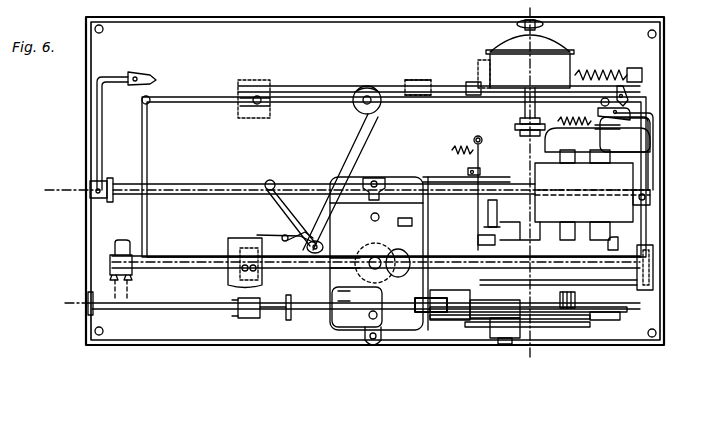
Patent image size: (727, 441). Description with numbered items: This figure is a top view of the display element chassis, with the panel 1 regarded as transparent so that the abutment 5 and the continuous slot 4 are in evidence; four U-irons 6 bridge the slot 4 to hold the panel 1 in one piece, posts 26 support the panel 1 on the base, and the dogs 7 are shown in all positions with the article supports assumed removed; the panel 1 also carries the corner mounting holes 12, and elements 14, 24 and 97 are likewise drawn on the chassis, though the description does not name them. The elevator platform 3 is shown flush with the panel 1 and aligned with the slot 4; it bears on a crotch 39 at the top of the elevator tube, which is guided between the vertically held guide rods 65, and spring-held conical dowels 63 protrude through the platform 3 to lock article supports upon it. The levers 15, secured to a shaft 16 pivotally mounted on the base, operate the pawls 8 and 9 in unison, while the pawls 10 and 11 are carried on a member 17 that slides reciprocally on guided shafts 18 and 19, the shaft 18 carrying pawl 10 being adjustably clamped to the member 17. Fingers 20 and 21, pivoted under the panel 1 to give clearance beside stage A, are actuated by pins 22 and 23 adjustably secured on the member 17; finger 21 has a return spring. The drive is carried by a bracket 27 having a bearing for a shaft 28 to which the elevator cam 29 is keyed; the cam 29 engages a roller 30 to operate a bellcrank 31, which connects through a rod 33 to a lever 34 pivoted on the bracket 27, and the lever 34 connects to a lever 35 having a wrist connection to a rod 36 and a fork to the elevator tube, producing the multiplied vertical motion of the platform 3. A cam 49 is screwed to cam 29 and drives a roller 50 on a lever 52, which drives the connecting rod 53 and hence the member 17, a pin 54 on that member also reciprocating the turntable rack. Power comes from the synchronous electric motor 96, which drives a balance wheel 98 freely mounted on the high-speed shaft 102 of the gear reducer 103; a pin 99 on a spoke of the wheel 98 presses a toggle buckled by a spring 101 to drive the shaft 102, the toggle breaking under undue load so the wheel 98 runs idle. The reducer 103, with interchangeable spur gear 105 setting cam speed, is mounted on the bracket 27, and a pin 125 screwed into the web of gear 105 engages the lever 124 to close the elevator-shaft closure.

The panel 1 is at (86, 84).
The elevator platform 3 is at (420, 242).
The slot 4 is at (147, 160).
The abutment 5 is at (89, 237).
The U-irons 6 is at (270, 116).
The dogs 7 is at (151, 98).
The pawl 8 is at (140, 74).
The pawl 9 is at (628, 108).
The pawl 10 is at (628, 90).
The pawl 11 is at (230, 272).
The mounting hole 12 is at (103, 31).
The hub 14 is at (372, 116).
The levers 15 is at (102, 100).
The shaft 16 is at (240, 185).
The member 17 is at (382, 152).
The guided shaft 18 is at (345, 86).
The guided shaft 19 is at (160, 306).
The finger 20 is at (300, 232).
The finger 21 is at (477, 215).
The pin 22 is at (414, 222).
The pin 23 is at (470, 168).
The pin 24 is at (474, 140).
The posts 26 is at (657, 338).
The bracket 27 is at (612, 250).
The shaft 28 is at (528, 324).
The elevator cam 29 is at (606, 320).
The roller 30 is at (436, 314).
The bellcrank 31 is at (384, 301).
The rod 33 is at (600, 285).
The lever 34 is at (654, 274).
The lever 35 is at (170, 256).
The rod 36 is at (130, 240).
The crotch 39 is at (388, 184).
The cam 49 is at (574, 330).
The roller 50 is at (488, 340).
The lever 52 is at (442, 332).
The connecting rod 53 is at (255, 314).
The pin 54 is at (312, 238).
The conical dowels 63 is at (314, 408).
The guide rods 65 is at (362, 181).
The electric motor 96 is at (490, 60).
The pulley 97 is at (520, 136).
The balance wheel 98 is at (625, 134).
The pin 99 is at (545, 148).
The spring 101 is at (577, 112).
The high-speed shaft 102 is at (622, 125).
The gear reducer 103 is at (592, 195).
The spur gear 105 is at (537, 195).
The lever 124 is at (478, 238).
The pin 125 is at (499, 212).